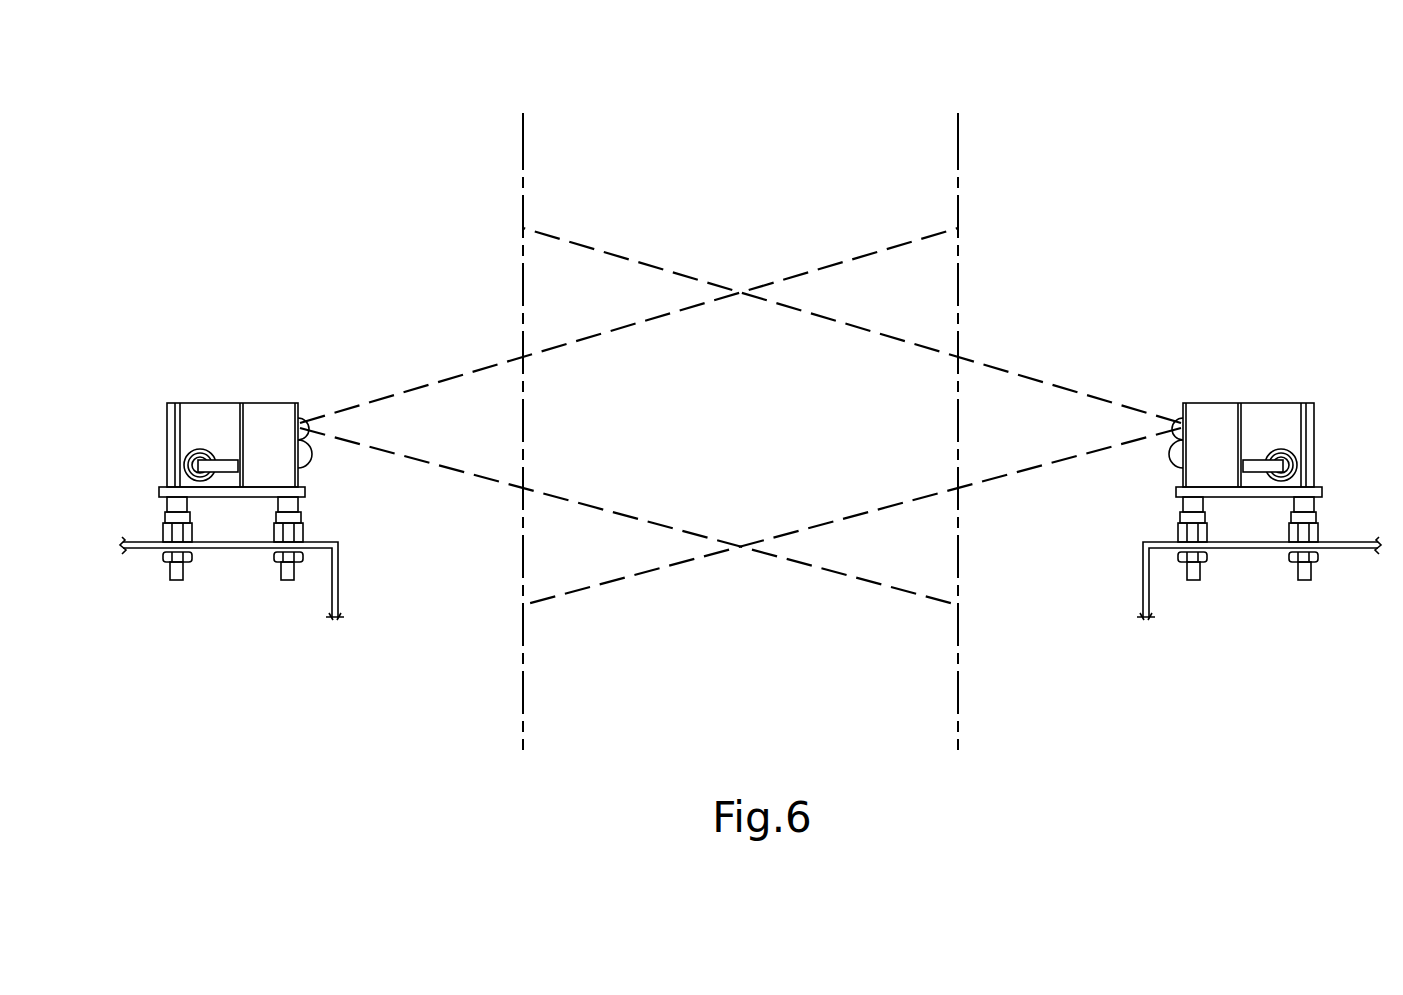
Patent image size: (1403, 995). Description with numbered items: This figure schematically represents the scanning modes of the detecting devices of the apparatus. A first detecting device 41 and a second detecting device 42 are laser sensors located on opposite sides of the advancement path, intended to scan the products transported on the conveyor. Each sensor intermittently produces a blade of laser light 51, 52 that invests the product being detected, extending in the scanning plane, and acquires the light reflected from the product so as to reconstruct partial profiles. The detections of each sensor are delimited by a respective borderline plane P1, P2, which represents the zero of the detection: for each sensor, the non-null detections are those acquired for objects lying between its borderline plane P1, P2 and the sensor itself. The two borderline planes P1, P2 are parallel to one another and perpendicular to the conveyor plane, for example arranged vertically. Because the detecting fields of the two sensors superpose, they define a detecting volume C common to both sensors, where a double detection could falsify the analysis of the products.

The first detecting device 41 is at (1213, 420).
The second detecting device 42 is at (208, 420).
The blade of laser light 51 is at (1046, 382).
The blade of laser light 52 is at (434, 383).
The borderline plane P1 is at (523, 143).
The borderline plane P2 is at (958, 143).
The common detecting volume C is at (721, 433).